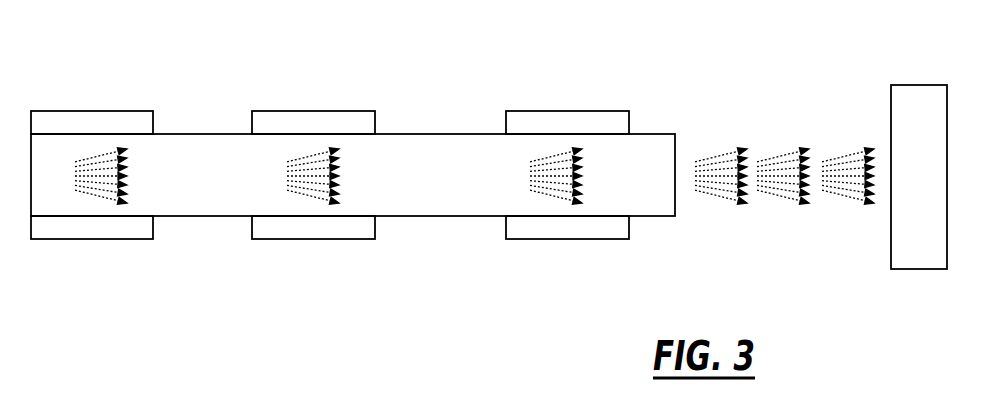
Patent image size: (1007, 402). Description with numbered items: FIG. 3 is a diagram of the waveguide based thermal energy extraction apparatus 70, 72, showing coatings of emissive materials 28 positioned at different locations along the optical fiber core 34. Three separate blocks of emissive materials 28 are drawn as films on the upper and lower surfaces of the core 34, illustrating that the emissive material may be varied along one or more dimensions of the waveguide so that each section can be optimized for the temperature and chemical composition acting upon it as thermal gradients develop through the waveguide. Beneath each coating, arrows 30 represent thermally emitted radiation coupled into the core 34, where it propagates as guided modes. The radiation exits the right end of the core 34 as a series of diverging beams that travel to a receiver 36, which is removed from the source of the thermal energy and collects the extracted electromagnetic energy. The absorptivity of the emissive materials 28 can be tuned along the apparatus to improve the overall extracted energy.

The emissive materials 28 is at (98, 112).
The light beam 30 is at (273, 192).
The optical fiber core 34 is at (662, 132).
The receiver 36 is at (917, 269).
The emitter assembly 70 is at (441, 62).
The emitter assembly 72 is at (440, 64).